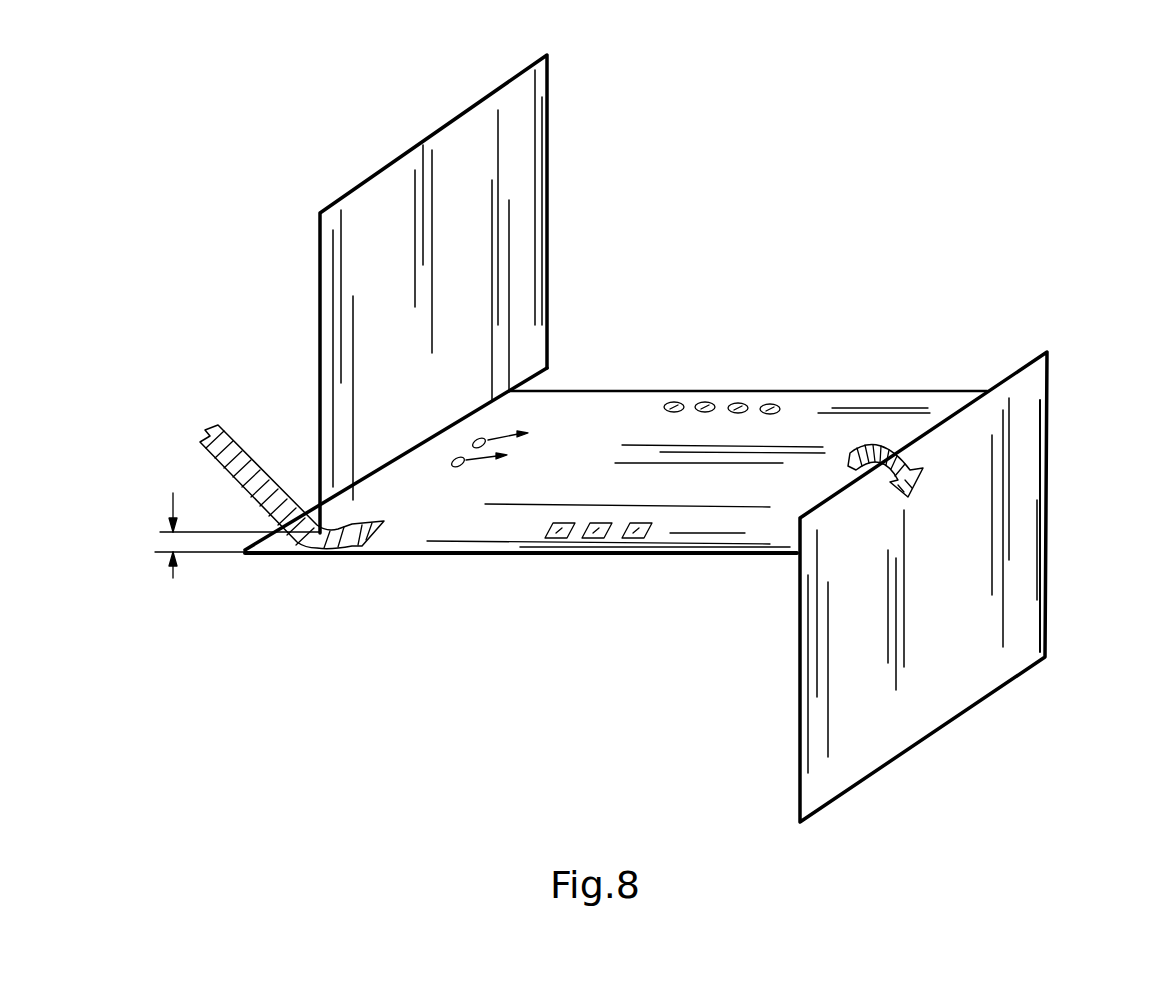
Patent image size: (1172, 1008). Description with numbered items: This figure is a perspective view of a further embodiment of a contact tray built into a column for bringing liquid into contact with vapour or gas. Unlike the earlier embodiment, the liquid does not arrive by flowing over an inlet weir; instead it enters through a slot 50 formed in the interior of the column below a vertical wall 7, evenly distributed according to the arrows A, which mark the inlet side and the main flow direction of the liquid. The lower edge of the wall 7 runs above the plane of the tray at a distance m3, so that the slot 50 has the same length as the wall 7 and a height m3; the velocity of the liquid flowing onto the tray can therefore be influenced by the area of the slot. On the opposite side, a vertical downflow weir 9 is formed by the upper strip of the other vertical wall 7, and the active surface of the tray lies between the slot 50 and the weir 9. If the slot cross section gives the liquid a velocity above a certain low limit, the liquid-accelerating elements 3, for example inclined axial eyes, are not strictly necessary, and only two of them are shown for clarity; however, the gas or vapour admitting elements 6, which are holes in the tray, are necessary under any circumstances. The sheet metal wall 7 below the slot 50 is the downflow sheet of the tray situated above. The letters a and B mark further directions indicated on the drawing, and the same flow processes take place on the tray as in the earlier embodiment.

The slot 50 is at (512, 403).
The vertical wall 7 is at (518, 291).
The gas or vapour admitting elements 6 is at (770, 405).
The liquid-accelerating elements 3 is at (455, 459).
The downflow weir 9 is at (918, 430).
The direction a is at (506, 436).
The inlet direction A is at (358, 550).
The arrow B is at (922, 471).
The slot height m3 is at (173, 546).